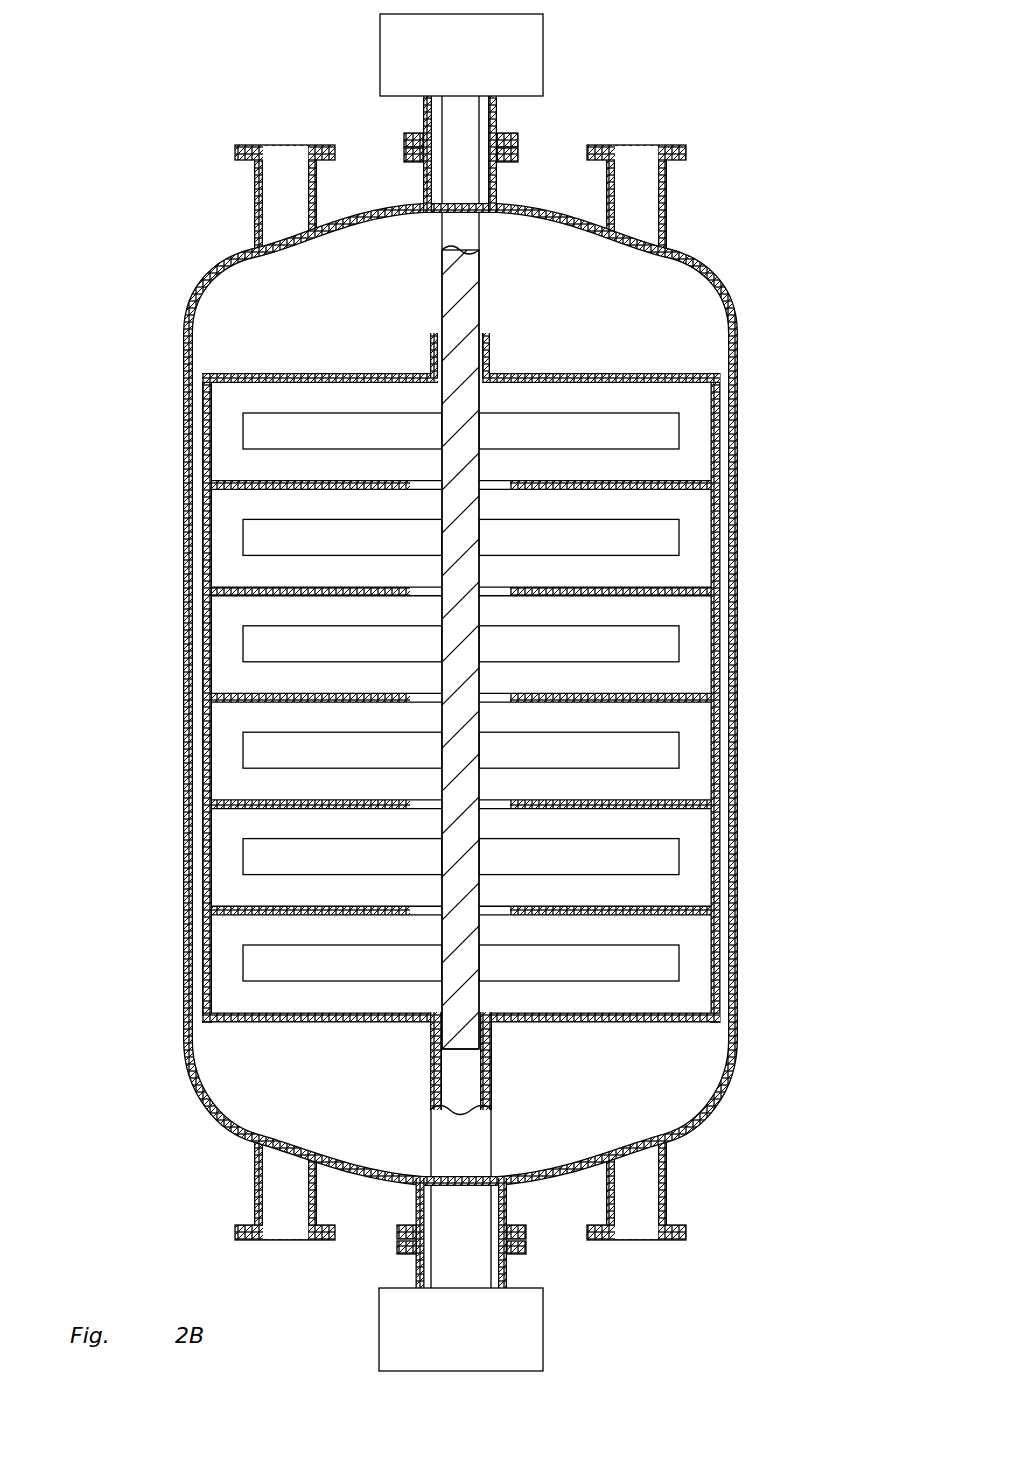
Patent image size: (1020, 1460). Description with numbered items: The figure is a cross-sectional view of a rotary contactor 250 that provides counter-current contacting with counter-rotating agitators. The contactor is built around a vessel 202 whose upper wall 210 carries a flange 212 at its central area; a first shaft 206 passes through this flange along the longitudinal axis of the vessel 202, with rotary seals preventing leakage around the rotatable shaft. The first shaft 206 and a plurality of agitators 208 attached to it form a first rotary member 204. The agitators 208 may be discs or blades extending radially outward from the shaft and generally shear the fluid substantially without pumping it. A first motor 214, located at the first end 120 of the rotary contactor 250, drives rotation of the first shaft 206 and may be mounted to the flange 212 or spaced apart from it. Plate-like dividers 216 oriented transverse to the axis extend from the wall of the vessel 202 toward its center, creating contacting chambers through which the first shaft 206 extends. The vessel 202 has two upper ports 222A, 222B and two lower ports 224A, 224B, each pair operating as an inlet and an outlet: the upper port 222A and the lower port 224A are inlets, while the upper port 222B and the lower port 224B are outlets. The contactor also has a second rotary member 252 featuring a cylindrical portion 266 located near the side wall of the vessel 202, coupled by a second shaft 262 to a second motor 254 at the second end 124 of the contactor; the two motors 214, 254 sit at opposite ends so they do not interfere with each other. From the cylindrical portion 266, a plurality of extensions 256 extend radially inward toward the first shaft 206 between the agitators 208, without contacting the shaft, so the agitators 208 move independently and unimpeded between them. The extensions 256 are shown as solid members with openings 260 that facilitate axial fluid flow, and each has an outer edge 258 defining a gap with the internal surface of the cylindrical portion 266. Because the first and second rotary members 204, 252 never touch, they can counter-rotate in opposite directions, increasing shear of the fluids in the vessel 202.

The first end 120 is at (178, 92).
The rotary contactor 250 is at (770, 36).
The second end 124 is at (703, 1336).
The vessel 202 is at (740, 355).
The rotary member 204 is at (442, 287).
The shaft 206 is at (495, 696).
The agitators 208 is at (680, 432).
The upper wall 210 is at (212, 272).
The flange 212 is at (500, 150).
The motor 214 is at (480, 67).
The dividers 216 is at (311, 372).
The upper port 222A is at (236, 151).
The upper port 222B is at (688, 152).
The lower port 224A is at (243, 1232).
The lower port 224B is at (688, 1232).
The second rotary member 252 is at (350, 1025).
The motor 254 is at (480, 1340).
The extensions 256 is at (228, 696).
The outer edge 258 is at (738, 752).
The openings 260 is at (680, 870).
The shaft 262 is at (493, 1070).
The cylindrical portion 266 is at (202, 752).